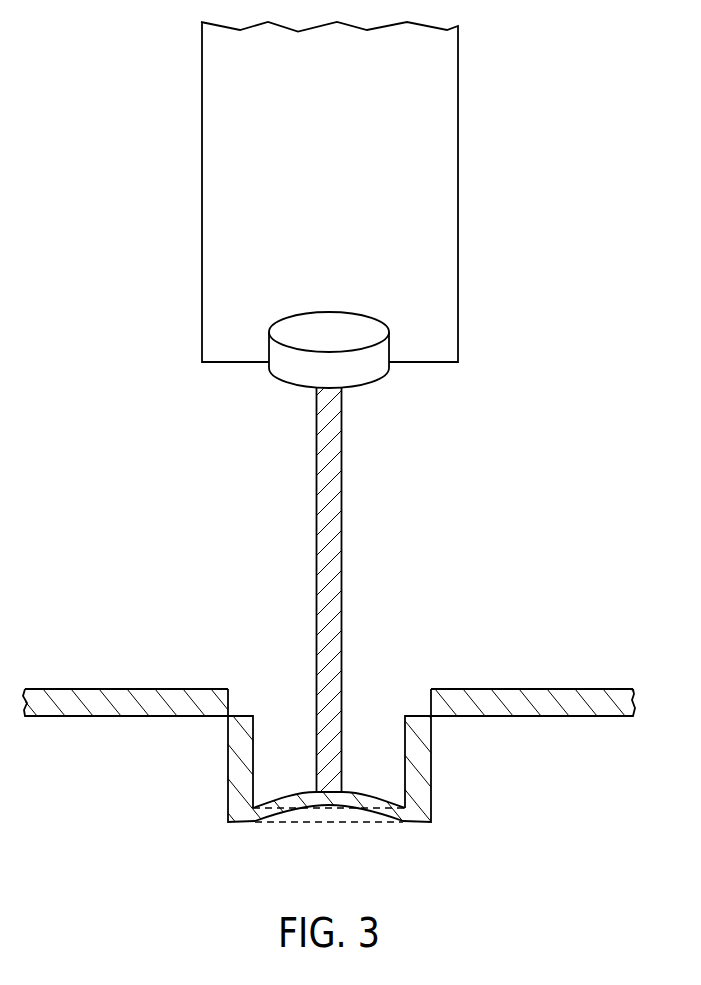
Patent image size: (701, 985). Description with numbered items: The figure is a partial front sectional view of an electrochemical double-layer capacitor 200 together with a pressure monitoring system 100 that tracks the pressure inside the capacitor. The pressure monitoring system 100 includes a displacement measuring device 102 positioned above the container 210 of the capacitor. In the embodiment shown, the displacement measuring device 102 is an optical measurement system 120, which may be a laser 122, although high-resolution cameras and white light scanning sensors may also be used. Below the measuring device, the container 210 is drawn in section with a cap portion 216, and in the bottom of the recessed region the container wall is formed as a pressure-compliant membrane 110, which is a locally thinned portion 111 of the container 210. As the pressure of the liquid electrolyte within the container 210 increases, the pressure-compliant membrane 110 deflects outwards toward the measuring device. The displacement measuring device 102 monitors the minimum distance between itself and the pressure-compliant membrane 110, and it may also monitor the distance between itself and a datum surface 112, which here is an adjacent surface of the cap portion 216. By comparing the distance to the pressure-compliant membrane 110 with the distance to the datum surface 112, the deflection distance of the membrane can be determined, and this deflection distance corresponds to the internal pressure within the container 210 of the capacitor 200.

The pressure monitoring system 100 is at (467, 593).
The displacement measuring device 102 is at (412, 205).
The pressure-compliant membrane 110 is at (362, 753).
The locally thinned portion 111 is at (345, 795).
The datum surface 112 is at (120, 689).
The optical measurement system 120 is at (380, 205).
The laser 122 is at (459, 323).
The electrochemical double-layer capacitor 200 is at (350, 750).
The container 210 is at (350, 723).
The cap portion 216 is at (568, 680).